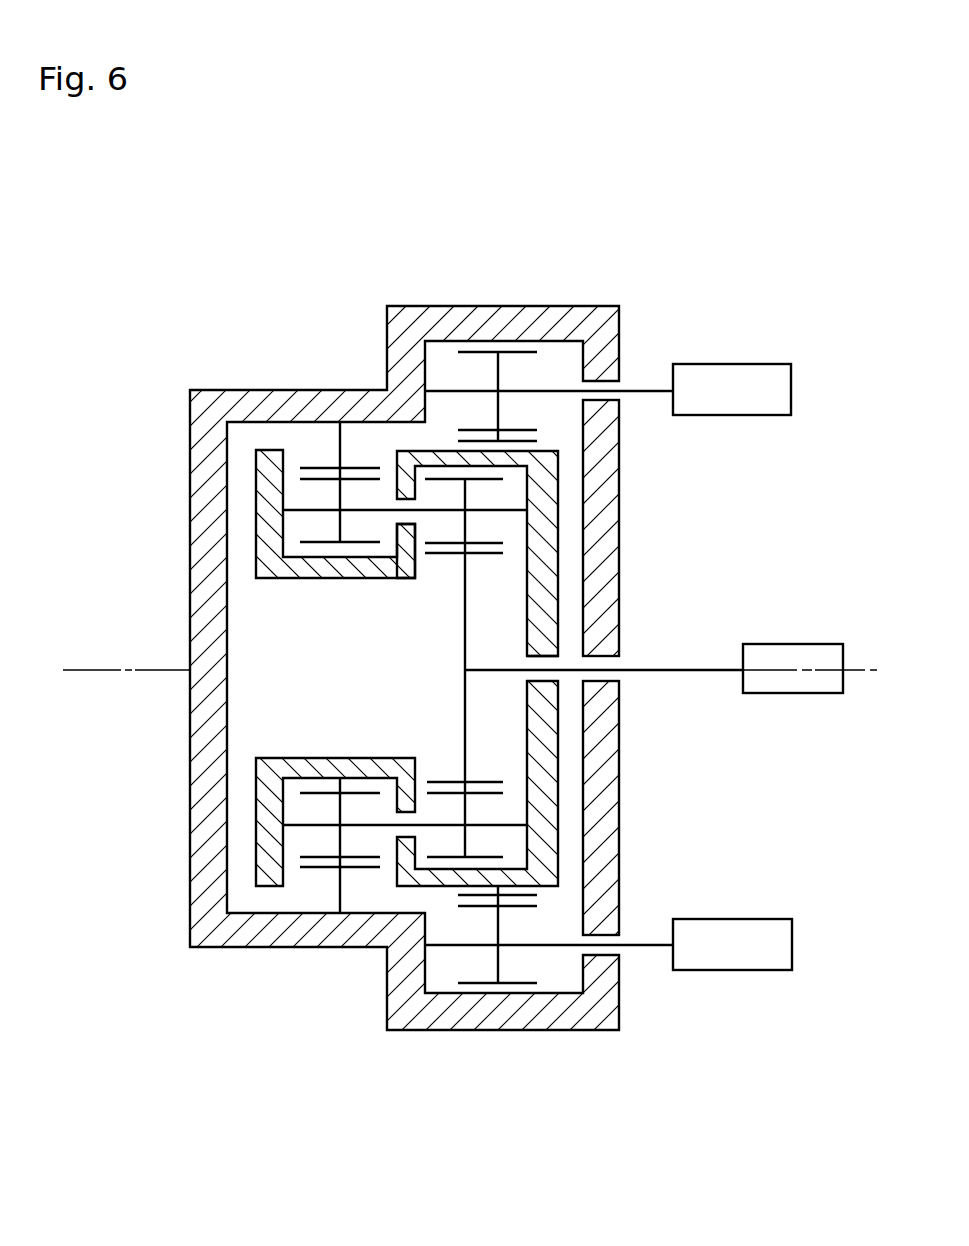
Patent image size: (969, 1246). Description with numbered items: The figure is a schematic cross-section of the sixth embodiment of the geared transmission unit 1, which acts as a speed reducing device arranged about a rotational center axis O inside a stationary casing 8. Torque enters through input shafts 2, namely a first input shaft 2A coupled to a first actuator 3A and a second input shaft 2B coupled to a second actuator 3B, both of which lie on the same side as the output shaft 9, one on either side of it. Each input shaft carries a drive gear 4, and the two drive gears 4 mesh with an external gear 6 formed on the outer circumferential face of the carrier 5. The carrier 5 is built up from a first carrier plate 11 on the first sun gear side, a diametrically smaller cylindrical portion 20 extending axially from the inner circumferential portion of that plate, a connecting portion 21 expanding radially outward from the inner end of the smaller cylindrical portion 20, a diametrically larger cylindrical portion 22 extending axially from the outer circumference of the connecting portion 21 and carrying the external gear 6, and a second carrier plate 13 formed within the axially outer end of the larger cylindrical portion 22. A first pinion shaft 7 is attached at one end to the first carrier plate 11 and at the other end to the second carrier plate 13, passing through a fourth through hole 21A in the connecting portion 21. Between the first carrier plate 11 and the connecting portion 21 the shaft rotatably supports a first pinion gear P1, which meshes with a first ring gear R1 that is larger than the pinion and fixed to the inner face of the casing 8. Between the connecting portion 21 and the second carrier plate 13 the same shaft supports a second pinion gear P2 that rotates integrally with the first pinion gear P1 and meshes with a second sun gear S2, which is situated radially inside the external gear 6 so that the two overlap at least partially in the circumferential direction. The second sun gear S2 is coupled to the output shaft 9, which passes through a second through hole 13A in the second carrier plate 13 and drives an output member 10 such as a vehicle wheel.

The geared transmission unit 1 is at (492, 226).
The input shaft 2 is at (561, 631).
The first input shaft 2A is at (647, 390).
The second input shaft 2B is at (643, 942).
The first actuator 3A is at (747, 364).
The second actuator 3B is at (743, 919).
The drive gear 4 is at (517, 352).
The carrier 5 is at (330, 601).
The external gear 6 is at (457, 443).
The first pinion shaft 7 is at (306, 514).
The casing 8 is at (205, 645).
The output shaft 9 is at (722, 668).
The output member 10 is at (793, 644).
The first carrier plate 11 is at (265, 480).
The second carrier plate 13 is at (542, 508).
The second through hole 13A is at (543, 657).
The diametrically smaller cylindrical portion 20 is at (338, 568).
The connecting portion 21 is at (403, 558).
The fourth through hole 21A is at (400, 819).
The diametrically larger cylindrical portion 22 is at (447, 878).
The first pinion gear P1 is at (308, 481).
The second pinion gear P2 is at (437, 477).
The first ring gear R1 is at (318, 868).
The second sun gear S2 is at (490, 780).
The rotational center axis O is at (482, 669).